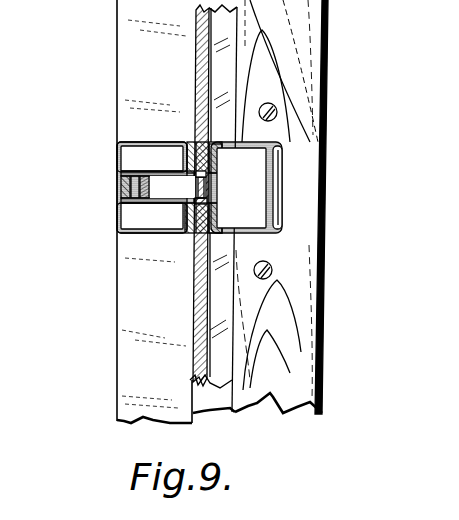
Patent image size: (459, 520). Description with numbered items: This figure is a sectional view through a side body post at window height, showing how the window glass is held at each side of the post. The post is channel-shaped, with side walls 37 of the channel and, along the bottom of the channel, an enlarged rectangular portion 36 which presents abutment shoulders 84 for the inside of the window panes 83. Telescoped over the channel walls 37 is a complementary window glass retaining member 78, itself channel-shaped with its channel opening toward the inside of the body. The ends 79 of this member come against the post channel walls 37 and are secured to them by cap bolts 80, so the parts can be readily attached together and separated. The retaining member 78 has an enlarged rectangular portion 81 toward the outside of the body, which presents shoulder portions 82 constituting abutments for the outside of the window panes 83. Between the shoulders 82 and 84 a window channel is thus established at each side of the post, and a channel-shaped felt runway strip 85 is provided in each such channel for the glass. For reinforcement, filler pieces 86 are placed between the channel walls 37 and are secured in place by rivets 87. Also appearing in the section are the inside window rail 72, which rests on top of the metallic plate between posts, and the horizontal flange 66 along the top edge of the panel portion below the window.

The enlarged rectangular portion 36 is at (253, 190).
The side walls of the channel 37 is at (167, 171).
The horizontal flange 66 is at (123, 392).
The inside window rail 72 is at (307, 300).
The window glass retaining member 78 is at (117, 163).
The ends of the retaining member 79 is at (208, 200).
The cap bolts 80 is at (198, 190).
The enlarged rectangular portion of the retaining member 81 is at (117, 231).
The shoulder portions 82 is at (174, 147).
The window panes 83 is at (196, 58).
The abutment shoulders 84 is at (266, 146).
The felt runway strip 85 is at (214, 148).
The filler pieces 86 is at (118, 188).
The rivets 87 is at (118, 195).